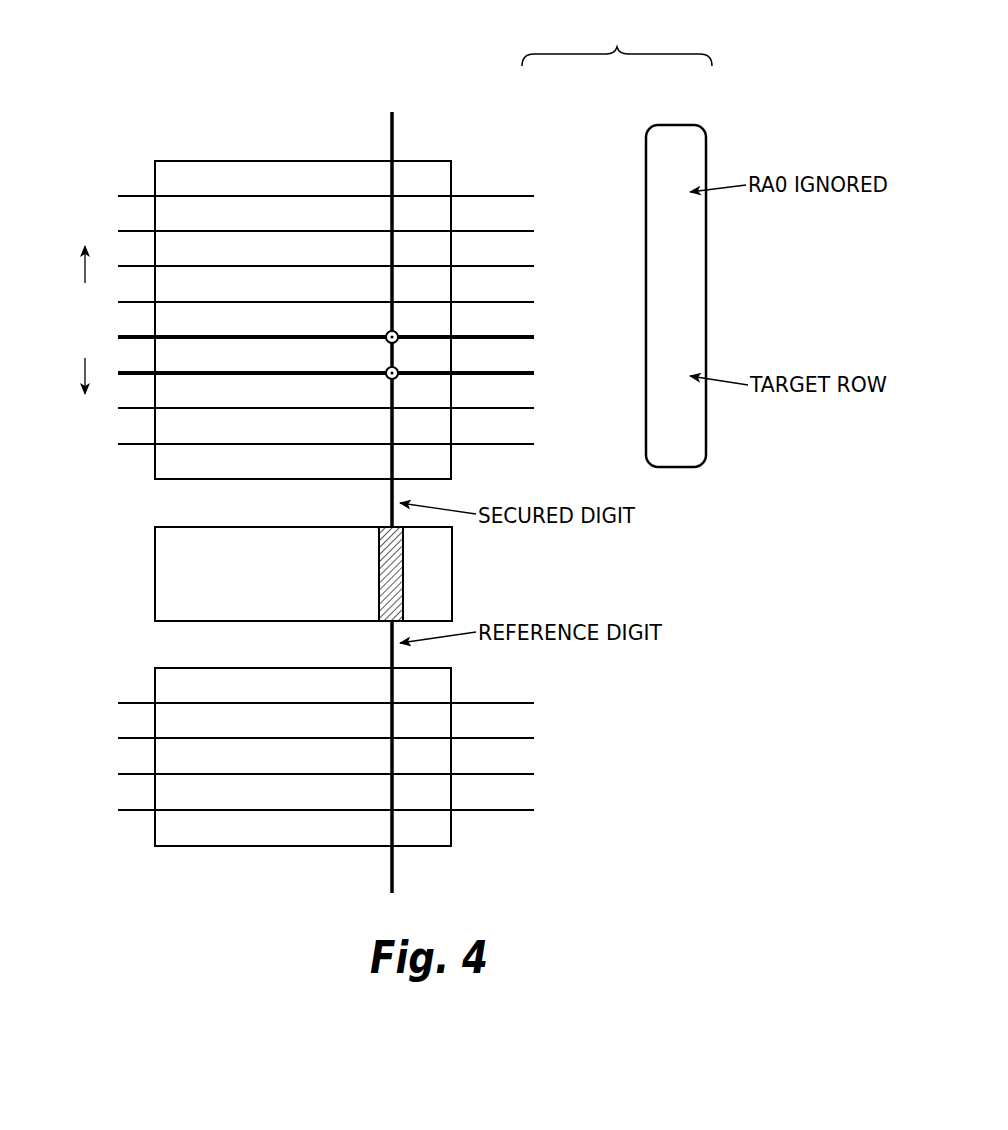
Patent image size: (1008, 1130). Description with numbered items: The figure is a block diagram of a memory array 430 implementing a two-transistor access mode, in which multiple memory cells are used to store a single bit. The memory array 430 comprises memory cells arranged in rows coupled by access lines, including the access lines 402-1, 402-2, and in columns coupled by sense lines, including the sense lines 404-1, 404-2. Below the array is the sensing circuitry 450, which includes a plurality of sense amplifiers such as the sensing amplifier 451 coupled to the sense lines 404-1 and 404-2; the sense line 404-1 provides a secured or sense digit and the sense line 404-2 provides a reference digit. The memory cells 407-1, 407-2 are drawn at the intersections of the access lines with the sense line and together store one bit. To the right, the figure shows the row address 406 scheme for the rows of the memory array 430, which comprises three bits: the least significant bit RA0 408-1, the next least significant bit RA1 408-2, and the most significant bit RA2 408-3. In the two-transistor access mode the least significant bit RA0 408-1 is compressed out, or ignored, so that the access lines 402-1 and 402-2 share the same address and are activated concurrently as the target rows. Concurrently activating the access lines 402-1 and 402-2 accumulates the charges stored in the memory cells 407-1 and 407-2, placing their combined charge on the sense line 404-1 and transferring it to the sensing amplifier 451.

The memory array 430 is at (111, 93).
The sense line 404-1 is at (390, 140).
The sense line 404-2 is at (390, 866).
The access line 402-1 is at (240, 335).
The access line 402-2 is at (240, 375).
The memory cell 407-1 is at (385, 333).
The memory cell 407-2 is at (385, 378).
The row address 406 is at (617, 247).
The RA0 (least significant bit of the row address) 408-1 is at (676, 136).
The RA1 (next least significant bit of the row address) 408-2 is at (616, 136).
The RA2 (most significant bit of the row address) 408-3 is at (557, 136).
The sensing circuitry 450 is at (160, 574).
The sensing amplifier 451 is at (378, 568).